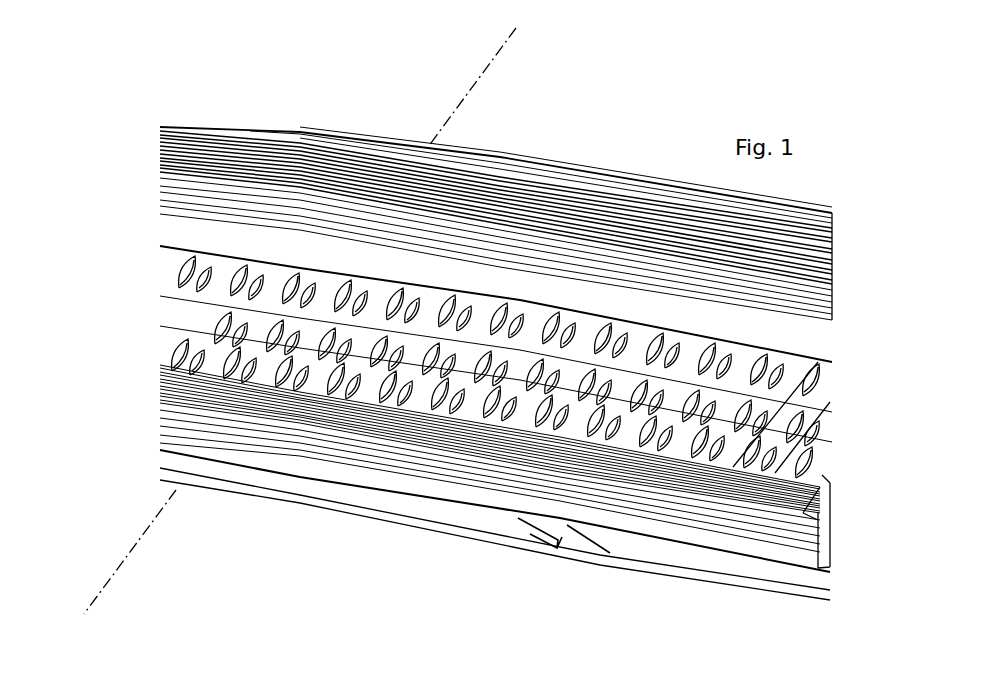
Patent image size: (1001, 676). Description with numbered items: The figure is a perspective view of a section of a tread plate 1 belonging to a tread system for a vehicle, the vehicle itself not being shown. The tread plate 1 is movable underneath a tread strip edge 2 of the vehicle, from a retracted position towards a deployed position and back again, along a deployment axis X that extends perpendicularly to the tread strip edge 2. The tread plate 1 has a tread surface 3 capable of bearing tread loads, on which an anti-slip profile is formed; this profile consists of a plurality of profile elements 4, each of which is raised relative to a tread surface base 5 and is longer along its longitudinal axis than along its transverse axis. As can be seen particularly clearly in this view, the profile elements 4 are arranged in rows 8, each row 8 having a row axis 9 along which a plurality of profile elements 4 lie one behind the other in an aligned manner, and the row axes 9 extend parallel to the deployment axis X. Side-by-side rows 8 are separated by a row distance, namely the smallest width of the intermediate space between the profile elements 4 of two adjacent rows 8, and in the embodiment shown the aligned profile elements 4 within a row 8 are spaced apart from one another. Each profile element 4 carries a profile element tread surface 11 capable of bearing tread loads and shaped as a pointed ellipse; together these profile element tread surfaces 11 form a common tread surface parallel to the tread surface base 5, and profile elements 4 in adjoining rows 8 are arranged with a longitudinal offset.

The tread plate 1 is at (753, 422).
The tread strip edge 2 is at (262, 237).
The tread surface 3 is at (146, 294).
The profile element 4 is at (648, 416).
The tread surface base 5 is at (610, 425).
The row 8 is at (215, 362).
The row axis 9 is at (187, 338).
The profile element tread surface 11 is at (557, 378).
The deployment axis X is at (120, 567).